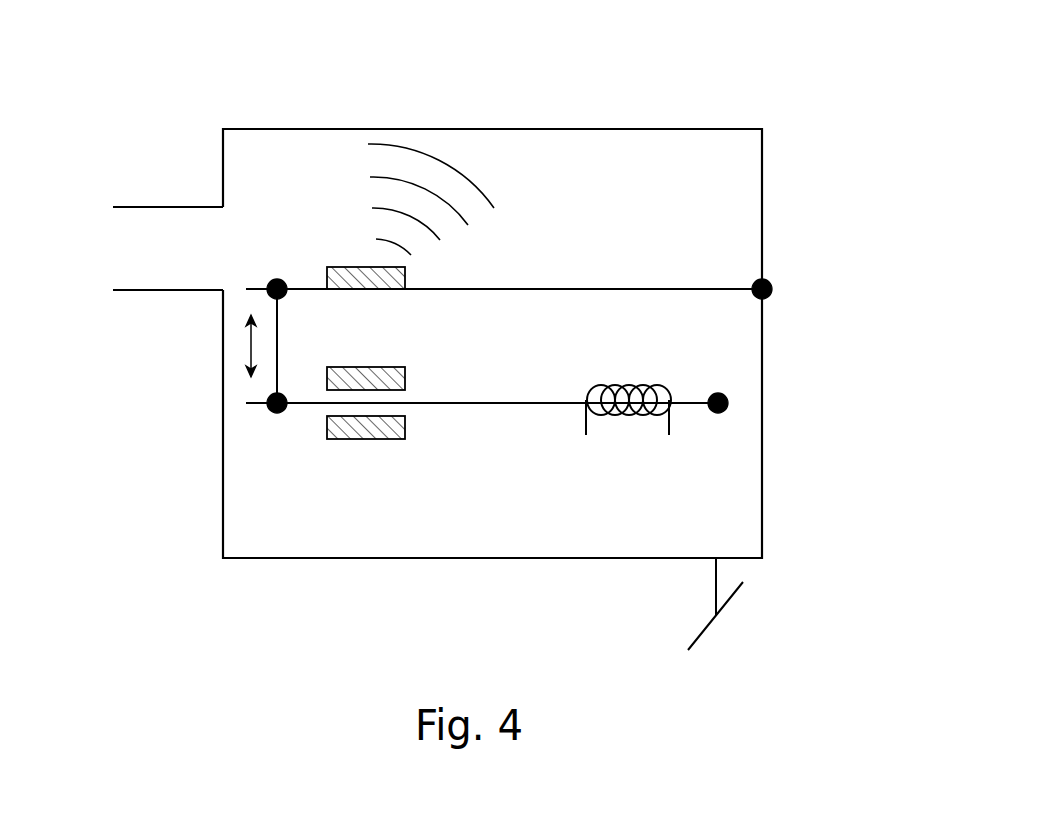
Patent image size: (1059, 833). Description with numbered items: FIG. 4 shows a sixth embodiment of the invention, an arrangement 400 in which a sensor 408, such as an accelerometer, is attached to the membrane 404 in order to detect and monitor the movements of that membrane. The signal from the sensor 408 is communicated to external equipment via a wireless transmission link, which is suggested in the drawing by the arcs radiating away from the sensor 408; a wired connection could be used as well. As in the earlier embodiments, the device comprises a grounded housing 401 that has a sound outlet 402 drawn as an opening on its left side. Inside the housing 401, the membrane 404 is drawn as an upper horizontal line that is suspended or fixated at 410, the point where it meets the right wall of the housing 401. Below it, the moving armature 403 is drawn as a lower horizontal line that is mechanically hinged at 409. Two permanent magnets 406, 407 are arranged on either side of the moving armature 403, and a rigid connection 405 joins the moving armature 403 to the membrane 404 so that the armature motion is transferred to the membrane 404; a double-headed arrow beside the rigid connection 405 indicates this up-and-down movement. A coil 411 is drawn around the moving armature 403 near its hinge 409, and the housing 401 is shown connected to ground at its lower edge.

The sensor arrangement 400 is at (797, 92).
The grounded housing 401 is at (763, 510).
The sound outlet 402 is at (128, 250).
The moving armature 403 is at (553, 403).
The membrane 404 is at (578, 288).
The rigid connection 405 is at (277, 392).
The permanent magnet 406 is at (377, 428).
The permanent magnet 407 is at (405, 382).
The sensor 408 is at (343, 272).
The hinge point of the moving armature 409 is at (718, 414).
The suspension point of the membrane 410 is at (773, 289).
The coil 411 is at (643, 416).